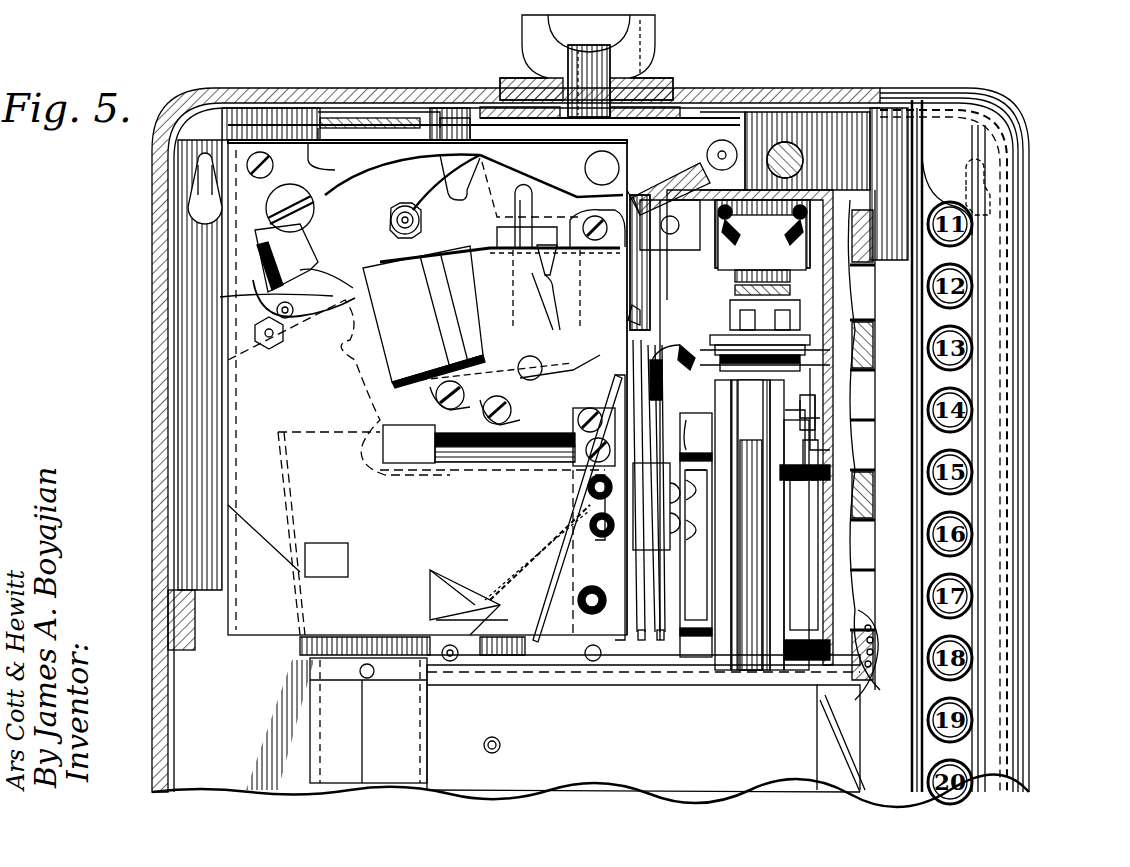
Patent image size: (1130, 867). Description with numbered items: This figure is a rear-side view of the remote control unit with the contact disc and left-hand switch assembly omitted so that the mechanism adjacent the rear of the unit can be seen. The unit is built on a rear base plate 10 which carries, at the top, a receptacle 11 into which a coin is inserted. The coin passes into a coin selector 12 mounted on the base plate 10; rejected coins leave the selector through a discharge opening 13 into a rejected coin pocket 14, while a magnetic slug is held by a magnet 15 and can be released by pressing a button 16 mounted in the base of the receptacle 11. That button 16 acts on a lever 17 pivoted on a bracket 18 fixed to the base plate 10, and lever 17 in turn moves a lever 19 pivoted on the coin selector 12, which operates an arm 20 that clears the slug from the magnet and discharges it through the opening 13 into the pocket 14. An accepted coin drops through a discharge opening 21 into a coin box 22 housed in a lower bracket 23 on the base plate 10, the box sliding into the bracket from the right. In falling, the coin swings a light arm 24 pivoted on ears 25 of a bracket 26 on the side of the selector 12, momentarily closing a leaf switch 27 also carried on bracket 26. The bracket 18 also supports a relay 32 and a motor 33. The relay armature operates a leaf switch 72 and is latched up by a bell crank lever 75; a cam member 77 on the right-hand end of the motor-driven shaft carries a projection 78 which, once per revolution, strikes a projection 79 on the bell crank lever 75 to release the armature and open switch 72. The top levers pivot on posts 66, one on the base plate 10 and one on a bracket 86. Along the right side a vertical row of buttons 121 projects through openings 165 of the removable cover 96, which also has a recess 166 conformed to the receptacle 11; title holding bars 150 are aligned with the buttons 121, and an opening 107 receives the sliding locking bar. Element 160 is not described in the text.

The rear base plate 10 is at (590, 447).
The receptacle 11 is at (530, 38).
The coin selector 12 is at (253, 378).
The discharge opening 13 is at (330, 630).
The rejected coin pocket 14 is at (340, 742).
The magnet 15 is at (392, 338).
The button 16 is at (615, 50).
The recess 166 is at (668, 74).
The lever 17 is at (658, 128).
The bracket 18 is at (745, 180).
The lever 19 is at (312, 130).
The arm 20 is at (272, 300).
The discharge opening 21 is at (515, 622).
The coin box 22 is at (845, 760).
The lower bracket 23 is at (675, 750).
The light arm 24 is at (545, 615).
The ears 25 is at (645, 325).
The bracket 26 is at (602, 506).
The leaf switch 27 is at (660, 375).
The relay 32 is at (768, 262).
The motor 33 is at (755, 525).
The posts 66 is at (792, 145).
The leaf switch 72 is at (800, 352).
The bell crank lever 75 is at (808, 400).
The cam member 77 is at (810, 408).
The projection 78 is at (801, 437).
The projection 79 is at (815, 404).
The bracket 86 is at (370, 120).
The removable cover 96 is at (1010, 385).
The opening 107 is at (888, 524).
The button 121 is at (958, 398).
The title holding bars 150 is at (870, 268).
The spring clip 160 is at (880, 650).
The openings 165 is at (965, 492).